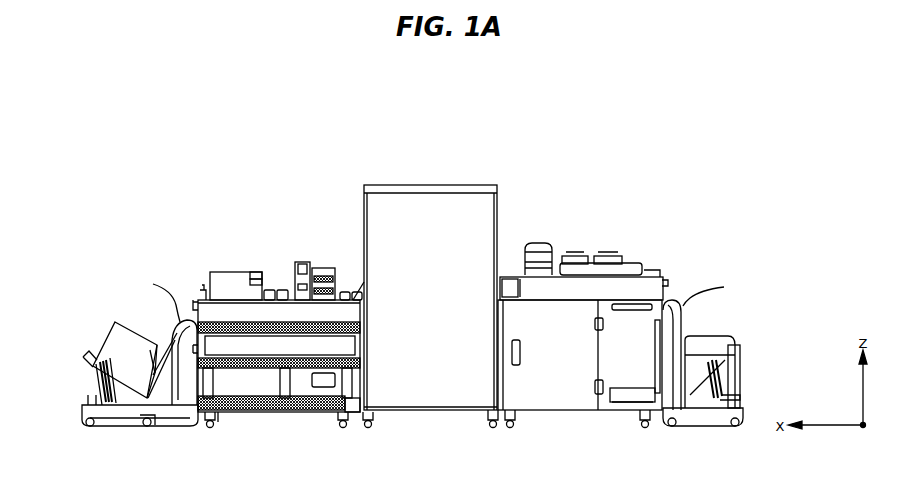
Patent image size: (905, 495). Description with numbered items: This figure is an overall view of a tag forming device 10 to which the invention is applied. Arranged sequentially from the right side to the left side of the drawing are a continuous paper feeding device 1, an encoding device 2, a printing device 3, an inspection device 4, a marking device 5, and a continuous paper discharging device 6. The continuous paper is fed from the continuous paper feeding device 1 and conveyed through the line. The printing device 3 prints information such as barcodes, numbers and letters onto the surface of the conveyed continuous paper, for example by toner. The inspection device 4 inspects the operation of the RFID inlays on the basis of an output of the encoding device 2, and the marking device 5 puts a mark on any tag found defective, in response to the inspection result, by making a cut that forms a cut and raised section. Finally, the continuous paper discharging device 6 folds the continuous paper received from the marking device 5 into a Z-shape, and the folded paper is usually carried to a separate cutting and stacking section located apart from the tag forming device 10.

The continuous paper feeding device 1 is at (672, 160).
The encoding device 2 is at (503, 160).
The printing device 3 is at (502, 160).
The inspection device 4 is at (287, 160).
The marking device 5 is at (285, 160).
The continuous paper discharging device 6 is at (80, 160).
The tag forming device 10 is at (108, 226).